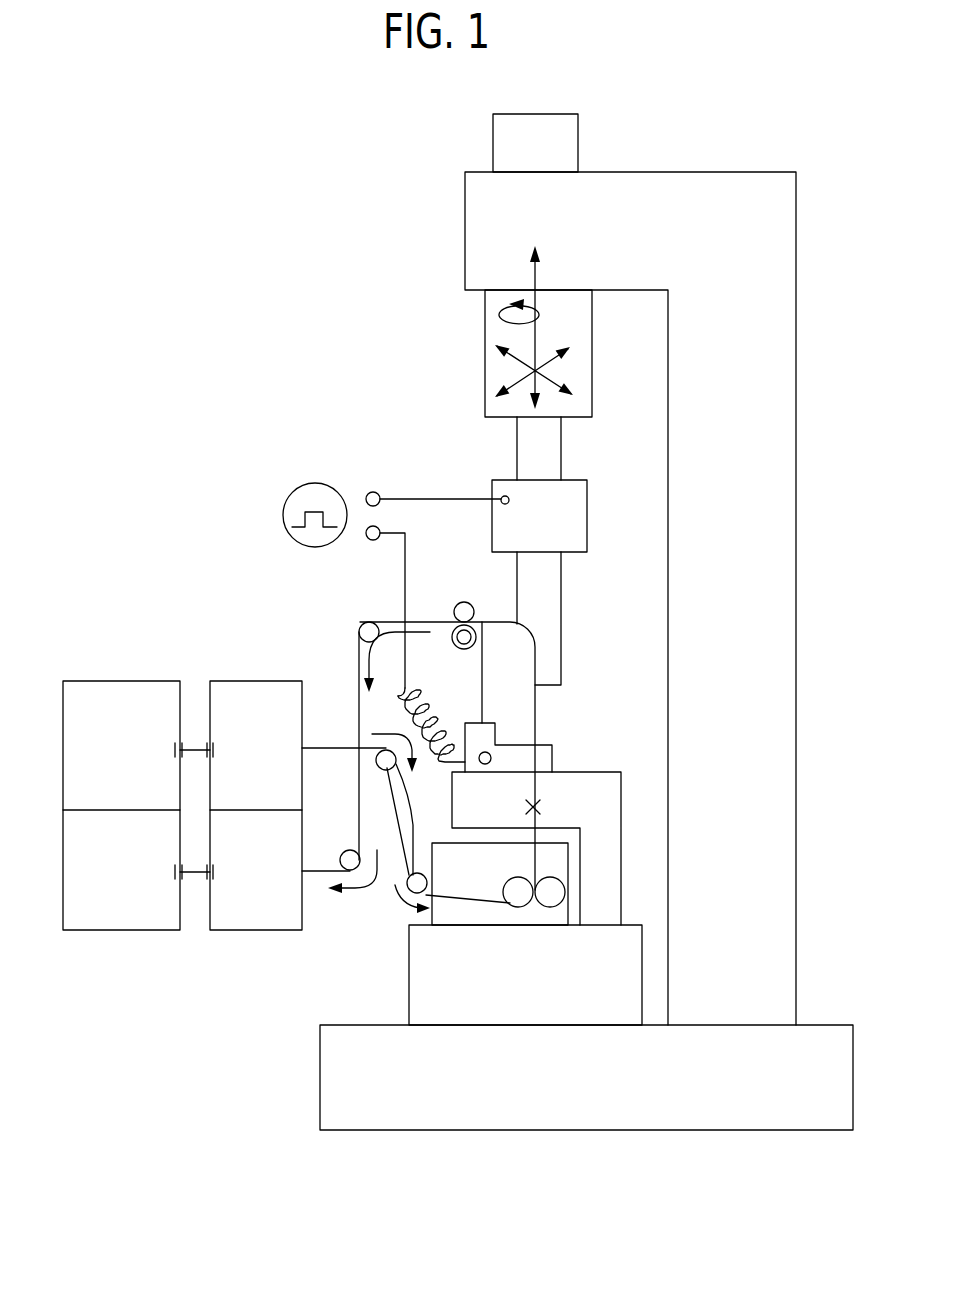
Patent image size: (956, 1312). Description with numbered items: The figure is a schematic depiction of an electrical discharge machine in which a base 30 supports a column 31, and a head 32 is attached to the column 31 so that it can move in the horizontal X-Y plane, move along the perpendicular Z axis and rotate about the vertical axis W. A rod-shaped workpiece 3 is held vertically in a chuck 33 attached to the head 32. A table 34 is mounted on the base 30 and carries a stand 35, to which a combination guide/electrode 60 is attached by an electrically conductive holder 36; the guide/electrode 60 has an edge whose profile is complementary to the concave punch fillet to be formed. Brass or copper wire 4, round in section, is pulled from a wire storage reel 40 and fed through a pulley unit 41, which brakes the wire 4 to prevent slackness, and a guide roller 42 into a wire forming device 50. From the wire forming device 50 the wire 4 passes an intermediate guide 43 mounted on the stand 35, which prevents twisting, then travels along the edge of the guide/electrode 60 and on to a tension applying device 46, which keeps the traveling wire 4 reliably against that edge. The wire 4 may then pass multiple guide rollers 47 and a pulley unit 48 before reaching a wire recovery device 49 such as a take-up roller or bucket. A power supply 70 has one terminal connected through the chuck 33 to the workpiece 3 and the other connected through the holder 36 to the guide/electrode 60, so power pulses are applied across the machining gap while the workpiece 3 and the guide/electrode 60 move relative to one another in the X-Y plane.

The workpiece 3 is at (542, 588).
The wire 4 is at (195, 750).
The base 30 is at (817, 1045).
The column 31 is at (773, 495).
The head 32 is at (485, 365).
The chuck 33 is at (573, 520).
The table 34 is at (423, 963).
The stand 35 is at (578, 780).
The holder 36 is at (542, 753).
The wire storage reel 40 is at (117, 717).
The pulley unit 41 is at (245, 717).
The guide roller 42 is at (413, 835).
The intermediate guide 43 is at (540, 808).
The tension applying device 46 is at (455, 608).
The guide rollers 47 is at (347, 853).
The pulley unit 48 is at (237, 912).
The wire recovery device 49 is at (98, 912).
The wire forming device 50 is at (428, 915).
The combination guide/electrode 60 is at (512, 680).
The power supply 70 is at (283, 518).